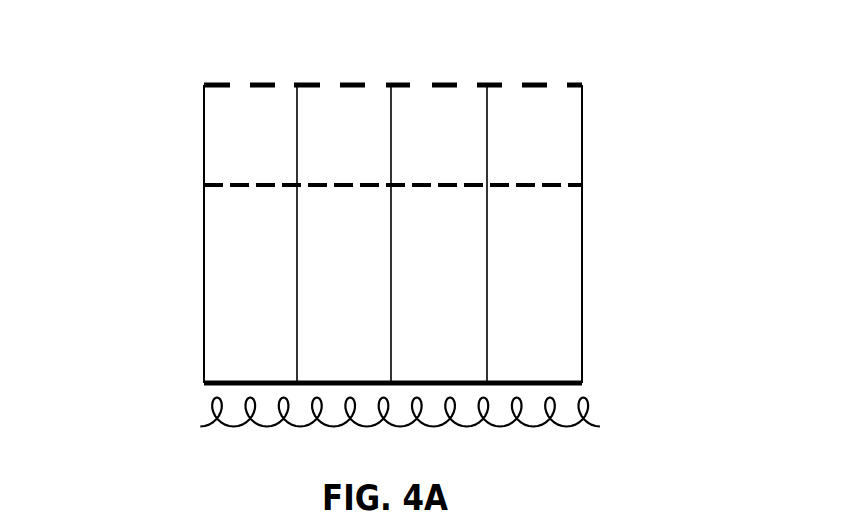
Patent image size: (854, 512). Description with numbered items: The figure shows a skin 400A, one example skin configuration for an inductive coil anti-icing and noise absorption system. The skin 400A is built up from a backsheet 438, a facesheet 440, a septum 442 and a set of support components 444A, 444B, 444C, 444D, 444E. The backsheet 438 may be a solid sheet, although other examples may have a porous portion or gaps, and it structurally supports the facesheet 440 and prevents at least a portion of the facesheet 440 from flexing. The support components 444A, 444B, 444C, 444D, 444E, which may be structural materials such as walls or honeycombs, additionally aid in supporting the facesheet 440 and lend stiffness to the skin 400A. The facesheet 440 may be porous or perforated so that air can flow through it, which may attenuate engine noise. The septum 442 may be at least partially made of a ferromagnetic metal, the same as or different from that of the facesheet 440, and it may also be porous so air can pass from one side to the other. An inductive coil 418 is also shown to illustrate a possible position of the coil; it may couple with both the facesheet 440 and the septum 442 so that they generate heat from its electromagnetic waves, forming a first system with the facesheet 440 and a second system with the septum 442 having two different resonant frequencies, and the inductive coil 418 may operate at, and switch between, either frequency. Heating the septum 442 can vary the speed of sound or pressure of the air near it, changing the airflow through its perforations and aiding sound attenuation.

The skin 400A is at (396, 223).
The facesheet 440 is at (418, 60).
The septum 442 is at (423, 160).
The support component 444A is at (131, 234).
The support component 444B is at (193, 234).
The support component 444C is at (562, 234).
The support component 444D is at (584, 234).
The support component 444E is at (640, 234).
The backsheet 438 is at (344, 358).
The inductive coil 418 is at (341, 413).